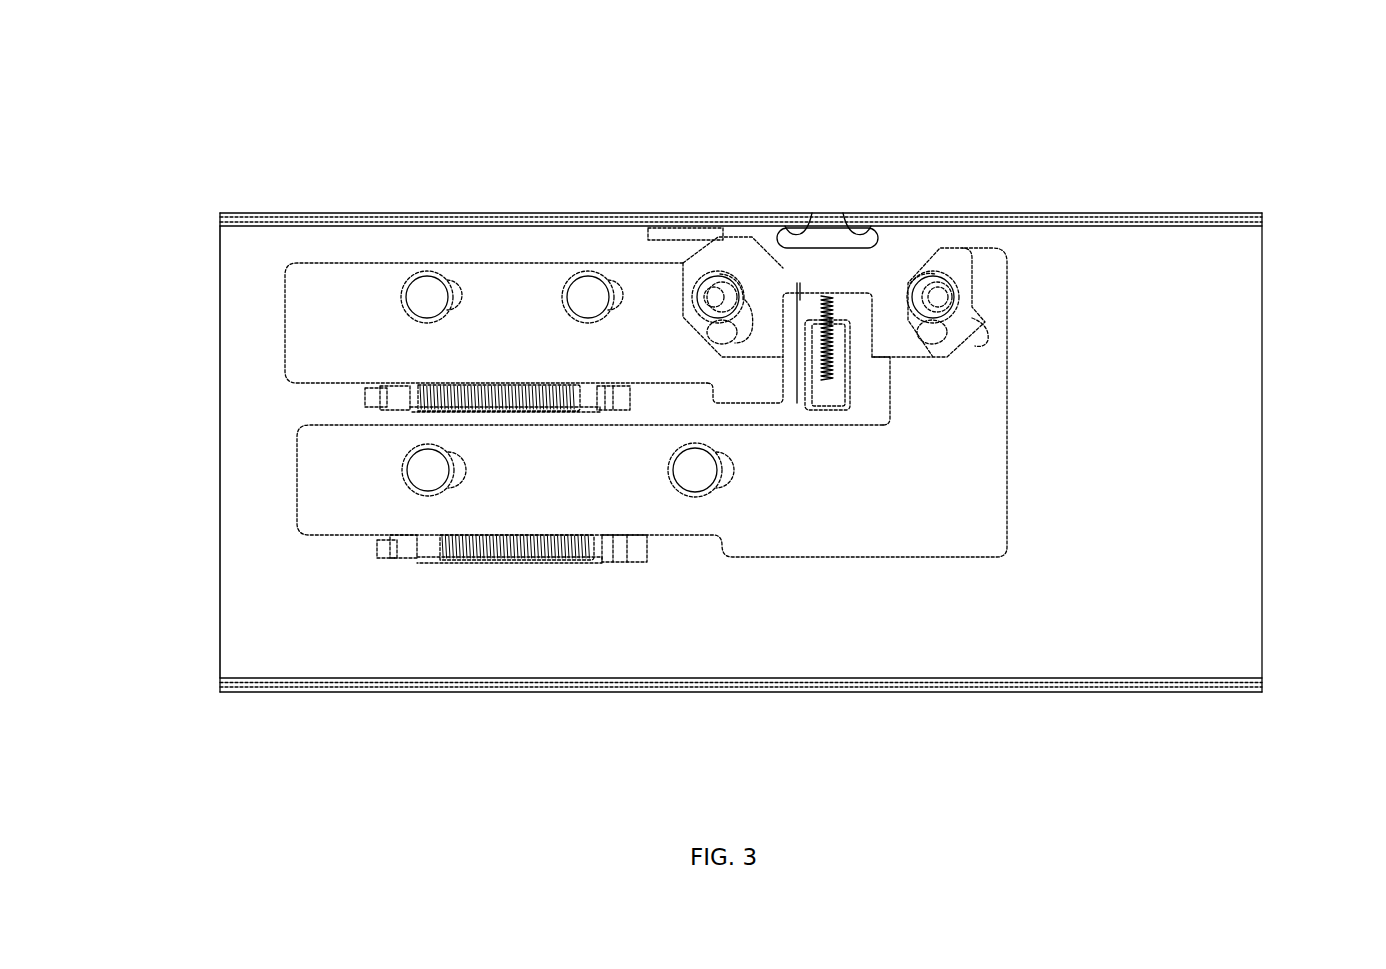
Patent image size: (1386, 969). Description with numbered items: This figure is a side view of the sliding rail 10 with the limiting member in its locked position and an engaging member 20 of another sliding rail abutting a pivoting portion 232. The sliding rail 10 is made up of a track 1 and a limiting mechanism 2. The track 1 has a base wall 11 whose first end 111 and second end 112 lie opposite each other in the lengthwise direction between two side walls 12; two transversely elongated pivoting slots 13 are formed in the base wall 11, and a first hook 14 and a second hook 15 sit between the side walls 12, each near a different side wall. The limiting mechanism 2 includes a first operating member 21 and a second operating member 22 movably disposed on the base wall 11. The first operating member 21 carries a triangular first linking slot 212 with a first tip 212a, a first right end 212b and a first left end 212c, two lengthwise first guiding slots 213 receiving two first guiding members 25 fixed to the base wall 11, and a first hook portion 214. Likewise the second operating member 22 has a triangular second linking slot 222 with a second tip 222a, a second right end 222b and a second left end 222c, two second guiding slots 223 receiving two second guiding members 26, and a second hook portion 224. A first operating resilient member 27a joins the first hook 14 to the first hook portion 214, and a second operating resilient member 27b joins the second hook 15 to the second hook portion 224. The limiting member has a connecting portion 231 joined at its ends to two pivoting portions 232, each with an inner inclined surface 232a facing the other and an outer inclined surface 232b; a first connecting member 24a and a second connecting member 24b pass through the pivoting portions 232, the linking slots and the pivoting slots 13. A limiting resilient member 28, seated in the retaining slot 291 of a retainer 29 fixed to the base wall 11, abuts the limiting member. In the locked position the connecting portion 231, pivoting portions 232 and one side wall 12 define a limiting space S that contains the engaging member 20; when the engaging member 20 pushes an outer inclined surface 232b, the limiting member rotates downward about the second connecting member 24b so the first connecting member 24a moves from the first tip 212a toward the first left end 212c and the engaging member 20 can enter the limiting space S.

The track 1 is at (235, 197).
The sliding rail 10 is at (1254, 183).
The base wall 11 is at (282, 648).
The side walls 12 is at (325, 213).
The first end 111 is at (221, 398).
The second end 112 is at (1265, 428).
The pivoting slots 13 is at (710, 287).
The first hook 14 is at (625, 405).
The second hook 15 is at (633, 553).
The limiting mechanism 2 is at (1027, 533).
The engaging member 20 is at (657, 228).
The first operating member 21 is at (283, 322).
The second operating member 22 is at (295, 483).
The first linking slot 212 is at (690, 280).
The first tip 212a is at (745, 288).
The first right end 212b is at (768, 332).
The first left end 212c is at (715, 340).
The first guiding slots 213 is at (622, 303).
The first hook portion 214 is at (365, 396).
The second linking slot 222 is at (988, 317).
The second tip 222a is at (933, 285).
The second right end 222b is at (975, 333).
The second left end 222c is at (932, 333).
The second guiding slots 223 is at (466, 476).
The second hook portion 224 is at (377, 550).
The connecting portion 231 is at (801, 290).
The pivoting portions 232 is at (976, 279).
The inner inclined surface 232a is at (834, 228).
The outer inclined surface 232b is at (721, 288).
The first connecting member 24a is at (718, 297).
The second connecting member 24b is at (962, 272).
The first guiding members 25 is at (588, 296).
The second guiding members 26 is at (430, 474).
The first operating resilient member 27a is at (540, 397).
The second operating resilient member 27b is at (540, 550).
The limiting resilient member 28 is at (826, 294).
The retainer 29 is at (857, 403).
The retaining slot 291 is at (830, 406).
The limiting space S is at (856, 241).